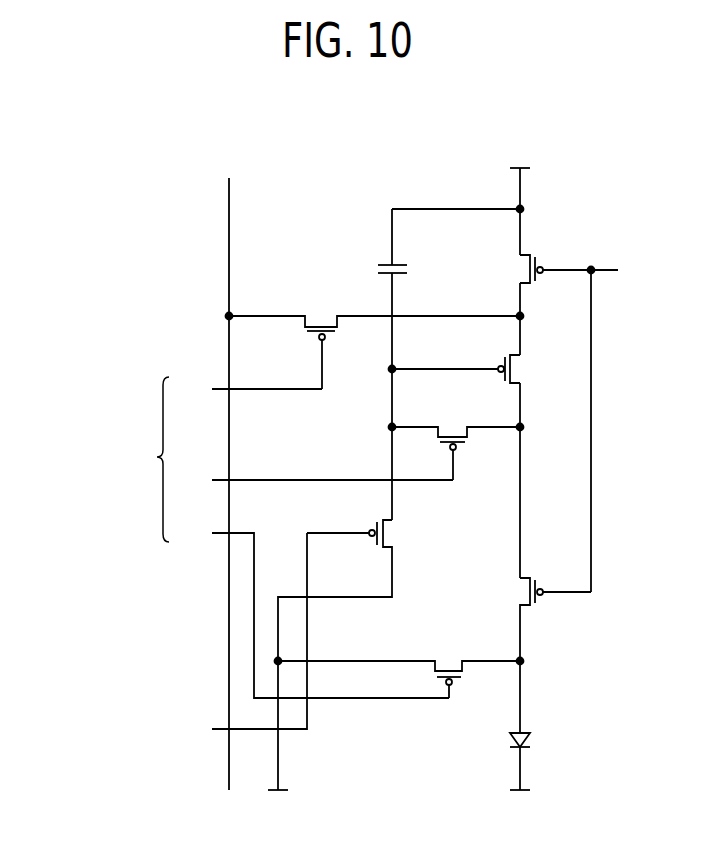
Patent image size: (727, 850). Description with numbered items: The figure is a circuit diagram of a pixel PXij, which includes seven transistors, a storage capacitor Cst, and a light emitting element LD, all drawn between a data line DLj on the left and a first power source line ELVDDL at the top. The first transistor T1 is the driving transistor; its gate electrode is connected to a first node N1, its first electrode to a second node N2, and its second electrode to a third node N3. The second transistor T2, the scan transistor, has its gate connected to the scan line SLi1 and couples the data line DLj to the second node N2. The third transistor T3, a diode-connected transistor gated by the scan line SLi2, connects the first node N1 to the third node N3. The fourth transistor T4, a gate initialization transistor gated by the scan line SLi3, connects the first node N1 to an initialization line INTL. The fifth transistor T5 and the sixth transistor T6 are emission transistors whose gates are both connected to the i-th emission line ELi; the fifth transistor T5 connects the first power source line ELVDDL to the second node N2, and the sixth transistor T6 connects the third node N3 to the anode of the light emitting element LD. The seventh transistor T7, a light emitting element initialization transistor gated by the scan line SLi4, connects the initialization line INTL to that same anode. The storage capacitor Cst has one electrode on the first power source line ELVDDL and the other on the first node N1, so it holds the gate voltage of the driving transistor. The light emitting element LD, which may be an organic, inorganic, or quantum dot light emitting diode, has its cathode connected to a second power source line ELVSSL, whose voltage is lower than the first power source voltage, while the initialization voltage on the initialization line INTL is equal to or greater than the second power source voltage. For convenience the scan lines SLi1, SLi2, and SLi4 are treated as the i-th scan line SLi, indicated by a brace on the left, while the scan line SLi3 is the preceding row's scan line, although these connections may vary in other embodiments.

The pixel PXij is at (586, 121).
The first power source line ELVDDL is at (471, 196).
The second power source line ELVSSL is at (516, 786).
The data line DLj is at (229, 468).
The i-th emission line ELi is at (580, 413).
The initialization line INTL is at (277, 743).
The i-th scan line SLi is at (147, 459).
The scan line SLi1 is at (245, 390).
The scan line SLi2 is at (310, 482).
The scan line SLi3 is at (187, 639).
The scan line SLi4 is at (308, 608).
The first transistor T1 is at (518, 391).
The second transistor T2 is at (374, 338).
The third transistor T3 is at (455, 439).
The fourth transistor T4 is at (347, 544).
The fifth transistor T5 is at (520, 285).
The sixth transistor T6 is at (518, 618).
The seventh transistor T7 is at (399, 666).
The storage capacitor Cst is at (409, 318).
The light emitting element LD is at (531, 708).
The first node N1 is at (431, 369).
The second node N2 is at (534, 328).
The third node N3 is at (534, 495).